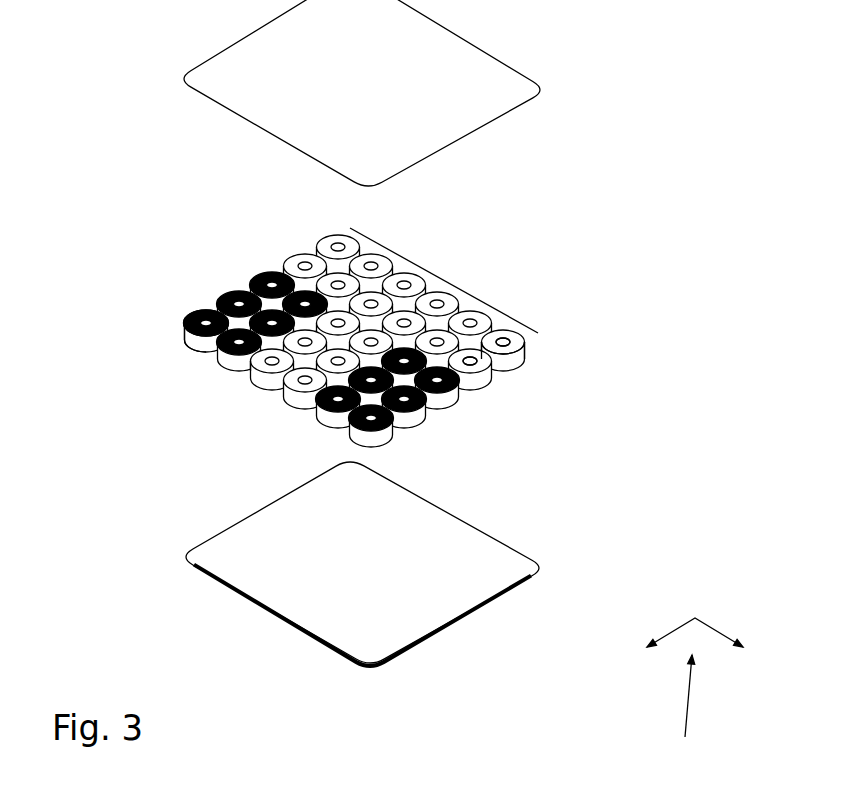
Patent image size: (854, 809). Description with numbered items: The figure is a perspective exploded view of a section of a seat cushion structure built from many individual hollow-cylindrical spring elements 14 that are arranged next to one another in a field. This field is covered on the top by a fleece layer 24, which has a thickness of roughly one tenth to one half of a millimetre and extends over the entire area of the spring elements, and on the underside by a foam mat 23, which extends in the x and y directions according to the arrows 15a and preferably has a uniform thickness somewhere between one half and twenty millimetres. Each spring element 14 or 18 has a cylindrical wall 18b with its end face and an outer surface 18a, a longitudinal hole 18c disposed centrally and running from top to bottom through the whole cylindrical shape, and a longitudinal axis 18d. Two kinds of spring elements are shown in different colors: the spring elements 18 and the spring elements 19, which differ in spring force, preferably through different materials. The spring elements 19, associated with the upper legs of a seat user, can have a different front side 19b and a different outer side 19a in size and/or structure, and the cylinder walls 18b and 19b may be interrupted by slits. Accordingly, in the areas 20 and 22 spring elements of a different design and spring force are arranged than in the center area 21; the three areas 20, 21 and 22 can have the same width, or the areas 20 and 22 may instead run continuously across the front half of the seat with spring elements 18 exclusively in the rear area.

The hollow-cylindrical spring element 14 is at (358, 347).
The arrows 15a is at (695, 692).
The hollow-cylindrical spring element 18 is at (483, 325).
The outer surface 18a is at (508, 368).
The cylindrical wall 18b is at (517, 344).
The longitudinal hole 18c is at (505, 360).
The longitudinal axis 18d is at (478, 370).
The hollow-cylindrical spring element 19 is at (224, 296).
The outer side 19a is at (190, 340).
The front side 19b is at (191, 316).
The area 20 is at (187, 343).
The area 21 is at (258, 378).
The area 22 is at (353, 432).
The foam mat 23 is at (435, 613).
The fleece layer 24 is at (450, 120).